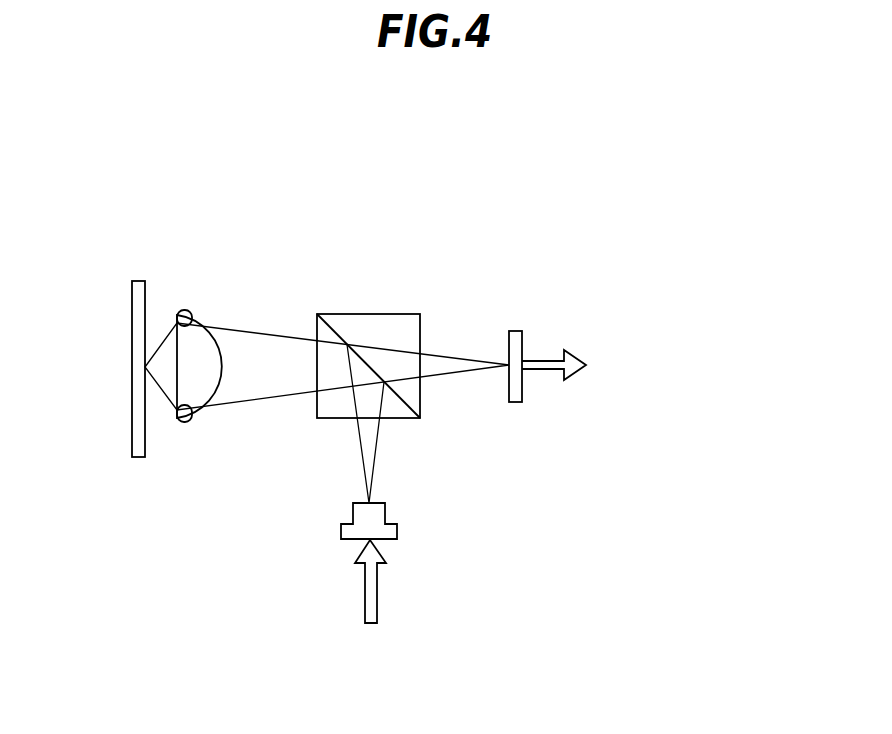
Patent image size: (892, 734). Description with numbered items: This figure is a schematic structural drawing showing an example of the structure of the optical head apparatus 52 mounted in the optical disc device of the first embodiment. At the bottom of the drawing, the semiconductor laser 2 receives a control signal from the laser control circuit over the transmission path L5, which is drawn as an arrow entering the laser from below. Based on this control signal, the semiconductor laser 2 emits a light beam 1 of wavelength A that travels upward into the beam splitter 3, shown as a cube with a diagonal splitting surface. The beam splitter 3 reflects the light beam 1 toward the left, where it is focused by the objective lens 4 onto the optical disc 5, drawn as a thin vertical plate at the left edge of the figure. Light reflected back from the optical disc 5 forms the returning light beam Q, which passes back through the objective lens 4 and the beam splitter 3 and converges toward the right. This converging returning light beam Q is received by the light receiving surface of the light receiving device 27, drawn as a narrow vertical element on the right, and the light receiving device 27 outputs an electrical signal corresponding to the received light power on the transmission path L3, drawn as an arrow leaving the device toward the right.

The optical head apparatus 52 is at (373, 222).
The optical disc 5 is at (132, 433).
The objective lens 4 is at (205, 350).
The beam splitter 3 is at (373, 330).
The light receiving device 27 is at (515, 335).
The light beam 1 is at (362, 437).
The semiconductor laser 2 is at (377, 515).
The returning light beam Q is at (441, 366).
The transmission path L3 is at (540, 368).
The transmission path L5 is at (374, 590).